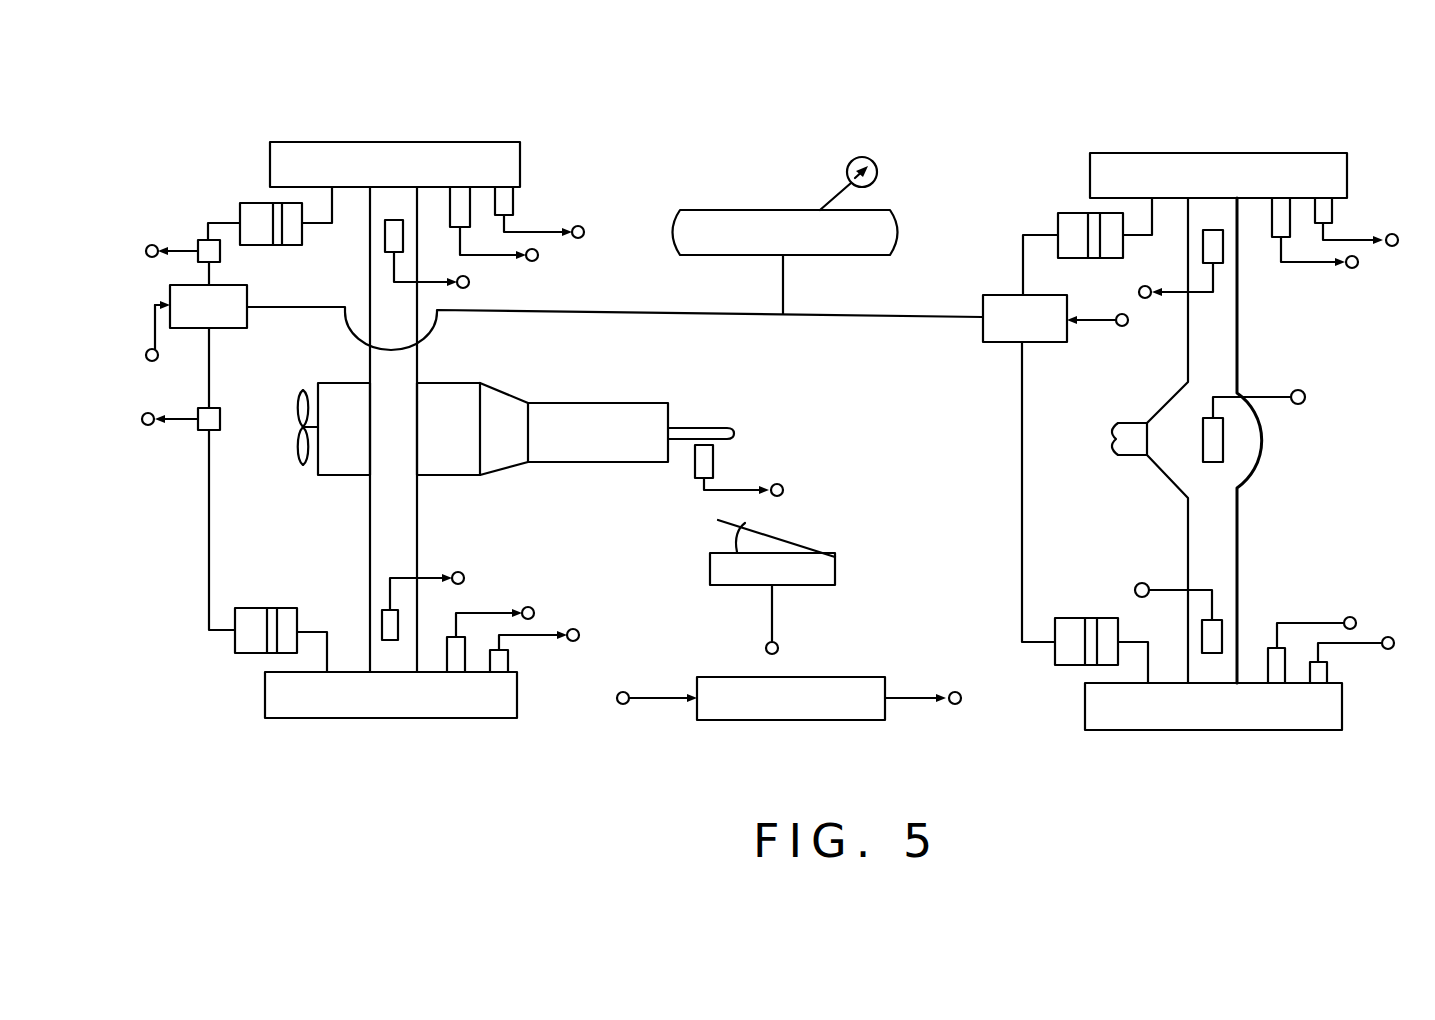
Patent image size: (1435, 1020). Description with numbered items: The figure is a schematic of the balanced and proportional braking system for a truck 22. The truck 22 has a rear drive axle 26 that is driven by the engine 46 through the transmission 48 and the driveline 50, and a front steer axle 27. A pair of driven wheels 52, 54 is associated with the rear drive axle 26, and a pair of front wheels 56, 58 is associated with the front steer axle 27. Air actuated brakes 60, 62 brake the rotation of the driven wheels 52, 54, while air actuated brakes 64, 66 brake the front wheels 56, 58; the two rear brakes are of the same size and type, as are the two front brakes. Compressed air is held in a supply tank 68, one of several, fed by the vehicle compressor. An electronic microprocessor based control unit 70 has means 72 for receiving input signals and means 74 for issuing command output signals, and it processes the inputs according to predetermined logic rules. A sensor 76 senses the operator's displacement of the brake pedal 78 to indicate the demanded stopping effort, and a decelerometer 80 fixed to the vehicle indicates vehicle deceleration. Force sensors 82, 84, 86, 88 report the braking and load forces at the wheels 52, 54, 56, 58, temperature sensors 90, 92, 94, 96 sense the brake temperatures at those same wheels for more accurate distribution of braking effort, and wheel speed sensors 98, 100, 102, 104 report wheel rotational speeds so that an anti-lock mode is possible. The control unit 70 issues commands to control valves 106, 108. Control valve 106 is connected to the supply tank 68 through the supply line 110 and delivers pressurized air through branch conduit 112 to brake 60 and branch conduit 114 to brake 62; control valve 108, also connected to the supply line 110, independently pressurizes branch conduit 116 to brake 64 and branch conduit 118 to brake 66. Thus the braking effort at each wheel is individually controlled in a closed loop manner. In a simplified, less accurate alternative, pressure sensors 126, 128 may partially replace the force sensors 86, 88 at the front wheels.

The truck 22 is at (971, 142).
The rear drive axle 26 is at (1234, 134).
The front steer axle 27 is at (399, 130).
The engine 46 is at (350, 445).
The transmission 48 is at (575, 445).
The driveline 50 is at (693, 430).
The driven wheel 52 is at (1153, 172).
The driven wheel 54 is at (1138, 710).
The front wheel 56 is at (448, 165).
The front wheel 58 is at (370, 695).
The air actuated brake 60 is at (1078, 258).
The air actuated brake 62 is at (1072, 627).
The air actuated brake 64 is at (265, 246).
The air actuated brake 66 is at (255, 608).
The supply tank 68 is at (770, 228).
The control unit 70 is at (827, 710).
The means for receiving input signals 72 is at (655, 700).
The means for issuing command output signals 74 is at (905, 698).
The sensor 76 is at (822, 567).
The brake pedal 78 is at (767, 533).
The decelerometer 80 is at (1223, 430).
The force sensor 82 is at (713, 458).
The force sensor 84 is at (1222, 640).
The force sensor 86 is at (387, 233).
The force sensor 88 is at (382, 625).
The temperature sensor 90 is at (1333, 215).
The temperature sensor 92 is at (1327, 672).
The temperature sensor 94 is at (507, 204).
The temperature sensor 96 is at (508, 660).
The wheel speed sensor 98 is at (1272, 225).
The wheel speed sensor 100 is at (1272, 660).
The wheel speed sensor 102 is at (450, 210).
The wheel speed sensor 104 is at (455, 655).
The control valve 106 is at (1010, 343).
The control valve 108 is at (230, 318).
The supply line 110 is at (850, 316).
The branch conduit 112 is at (1035, 235).
The branch conduit 114 is at (1020, 503).
The branch conduit 116 is at (212, 223).
The branch conduit 118 is at (207, 520).
The pressure sensor 126 is at (203, 242).
The pressure sensor 128 is at (220, 421).